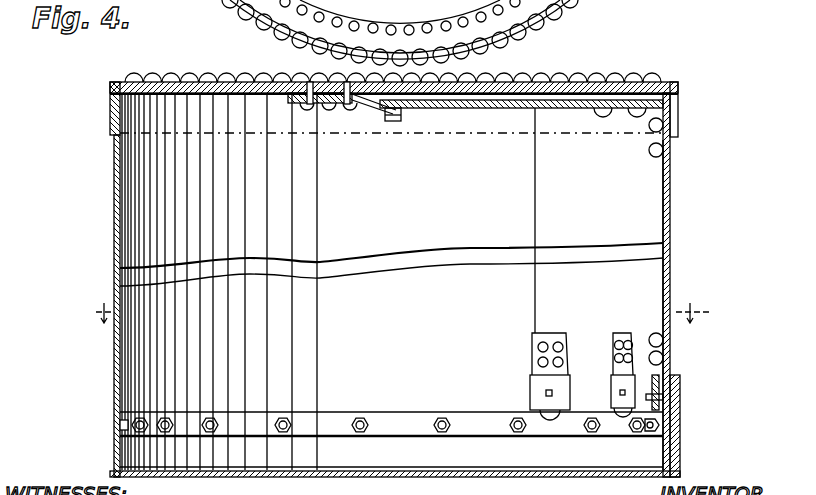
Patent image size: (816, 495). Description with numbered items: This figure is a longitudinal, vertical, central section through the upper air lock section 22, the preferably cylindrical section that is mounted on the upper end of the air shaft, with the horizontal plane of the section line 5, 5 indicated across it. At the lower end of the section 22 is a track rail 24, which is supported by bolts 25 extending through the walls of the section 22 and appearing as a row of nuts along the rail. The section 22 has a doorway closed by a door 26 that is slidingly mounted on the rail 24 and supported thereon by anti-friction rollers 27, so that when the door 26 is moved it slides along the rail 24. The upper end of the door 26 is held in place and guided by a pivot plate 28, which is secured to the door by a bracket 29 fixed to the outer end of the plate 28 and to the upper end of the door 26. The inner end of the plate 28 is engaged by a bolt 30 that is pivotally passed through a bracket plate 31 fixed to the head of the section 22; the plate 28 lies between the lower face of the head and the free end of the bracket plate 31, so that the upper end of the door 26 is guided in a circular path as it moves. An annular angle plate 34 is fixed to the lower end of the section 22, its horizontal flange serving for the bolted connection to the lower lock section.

The upper air lock section 22 is at (601, 97).
The track rail 24 is at (477, 422).
The bolts 25 is at (209, 416).
The door 26 is at (672, 210).
The anti-friction rollers 27 is at (532, 412).
The pivot plate 28 is at (440, 109).
The bracket 29 is at (622, 116).
The bolt 30 is at (393, 122).
The bracket plate 31 is at (364, 112).
The annular angle plate 34 is at (383, 470).
The section line 5 is at (401, 312).